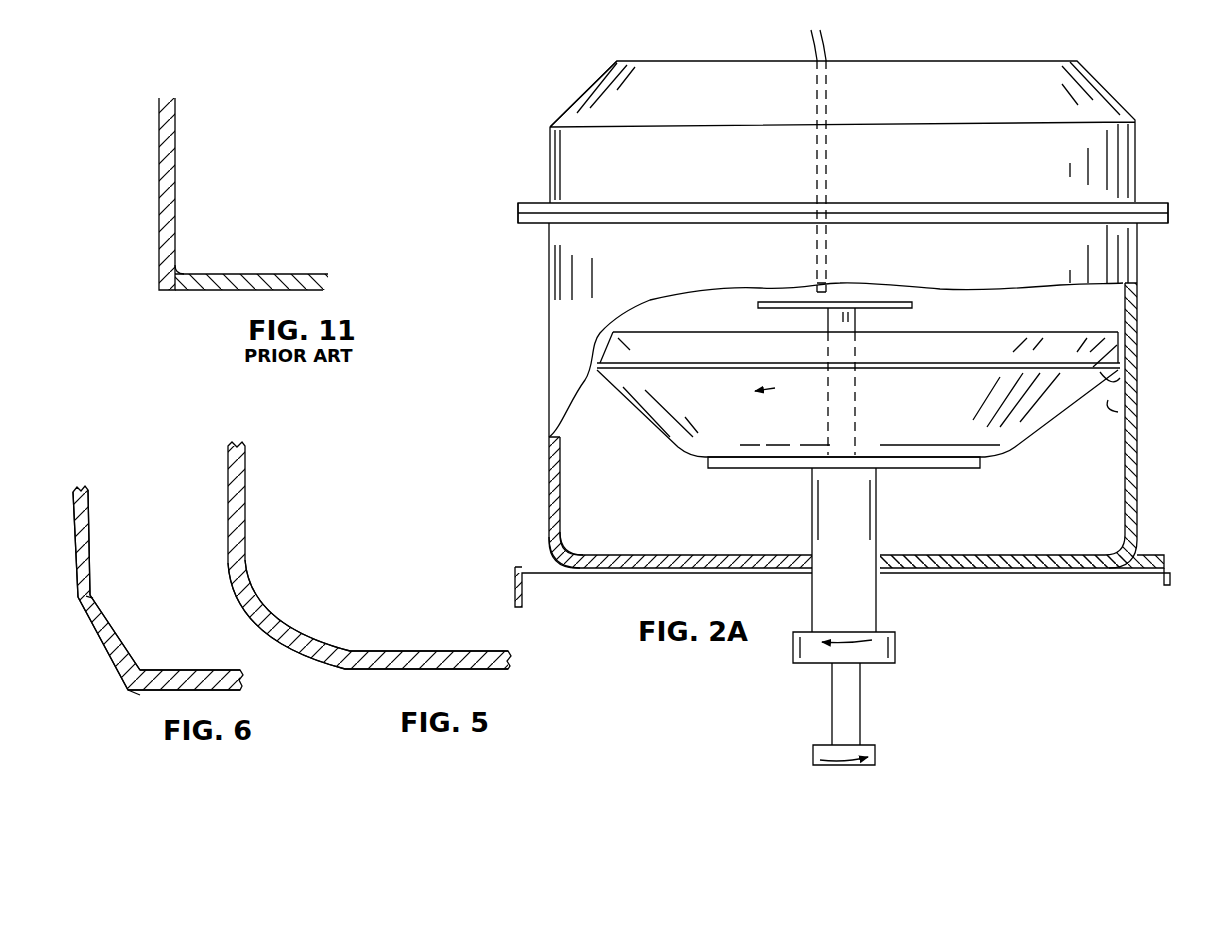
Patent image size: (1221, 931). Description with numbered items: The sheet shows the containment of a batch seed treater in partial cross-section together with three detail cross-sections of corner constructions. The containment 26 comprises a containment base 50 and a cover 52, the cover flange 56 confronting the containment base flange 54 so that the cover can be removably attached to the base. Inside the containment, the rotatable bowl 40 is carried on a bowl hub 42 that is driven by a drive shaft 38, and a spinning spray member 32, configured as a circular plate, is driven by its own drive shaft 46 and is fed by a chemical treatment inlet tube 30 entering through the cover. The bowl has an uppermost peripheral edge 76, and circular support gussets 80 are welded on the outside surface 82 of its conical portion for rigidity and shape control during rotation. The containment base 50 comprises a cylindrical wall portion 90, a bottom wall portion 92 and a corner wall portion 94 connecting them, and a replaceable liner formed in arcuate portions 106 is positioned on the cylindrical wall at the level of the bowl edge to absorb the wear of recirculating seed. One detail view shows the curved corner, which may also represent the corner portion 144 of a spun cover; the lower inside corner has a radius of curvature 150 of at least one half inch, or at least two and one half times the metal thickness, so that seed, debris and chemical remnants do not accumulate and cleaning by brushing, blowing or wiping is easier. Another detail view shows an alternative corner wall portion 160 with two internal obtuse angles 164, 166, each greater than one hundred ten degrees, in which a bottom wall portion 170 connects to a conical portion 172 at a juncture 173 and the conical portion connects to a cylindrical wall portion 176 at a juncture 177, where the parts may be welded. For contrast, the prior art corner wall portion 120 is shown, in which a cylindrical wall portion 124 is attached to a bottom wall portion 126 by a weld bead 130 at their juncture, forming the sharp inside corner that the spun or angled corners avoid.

In FIG. 2A, the containment 26 is at (1093, 73).
In FIG. 2A, the chemical treatment inlet tube 30 is at (828, 92).
In FIG. 2A, the spinning spray member 32 is at (915, 304).
In FIG. 2A, the drive shaft 38 is at (880, 598).
In FIG. 2A, the rotatable bowl 40 is at (953, 417).
In FIG. 2A, the bowl hub 42 is at (917, 463).
In FIG. 2A, the drive shaft for the spinning spray member 46 is at (910, 300).
In FIG. 2A, the containment base 50 is at (551, 415).
In FIG. 2A, the cover 52 is at (616, 62).
In FIG. 2A, the containment base flange 54 is at (522, 221).
In FIG. 2A, the cover flange 56 is at (1153, 200).
In FIG. 2A, the uppermost peripheral edge 76 is at (1023, 330).
In FIG. 2A, the circular support gussets 80 is at (1112, 378).
In FIG. 2A, the outside surface 82 is at (1063, 397).
In FIG. 2A, the cylindrical wall portion 90 is at (1138, 492).
In FIG. 5, the cylindrical wall portion 90 is at (248, 492).
In FIG. 2A, the bottom wall portion 92 is at (1057, 574).
In FIG. 5, the bottom wall portion 92 is at (500, 669).
In FIG. 2A, the corner wall portion 94 is at (1136, 571).
In FIG. 5, the corner wall portion 94 is at (282, 653).
In FIG. 2A, the arcuate portions 106 is at (1118, 410).
In FIG. 11, the prior art corner wall portion 120 is at (224, 194).
In FIG. 11, the cylindrical wall portion 124 is at (159, 152).
In FIG. 11, the bottom wall portion 126 is at (289, 274).
In FIG. 11, the weld bead 130 is at (178, 268).
In FIG. 5, the corner portion 144 is at (298, 661).
In FIG. 5, the radius of curvature 150 is at (266, 594).
In FIG. 6, the corner wall portion 160 is at (151, 603).
In FIG. 6, the internal obtuse angle 164 is at (105, 603).
In FIG. 6, the internal obtuse angle 166 is at (156, 668).
In FIG. 6, the bottom wall portion 170 is at (210, 669).
In FIG. 6, the conical portion 172 is at (112, 632).
In FIG. 6, the juncture 173 is at (140, 680).
In FIG. 6, the cylindrical wall portion 176 is at (90, 512).
In FIG. 6, the juncture 177 is at (88, 599).